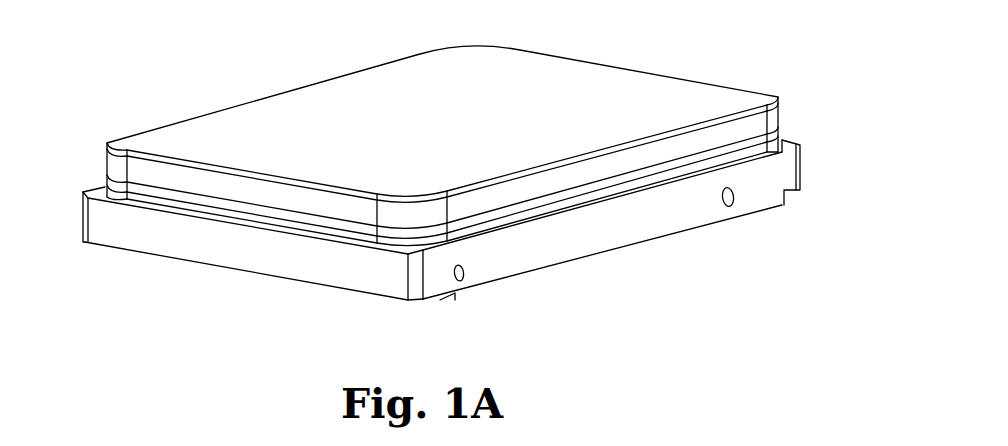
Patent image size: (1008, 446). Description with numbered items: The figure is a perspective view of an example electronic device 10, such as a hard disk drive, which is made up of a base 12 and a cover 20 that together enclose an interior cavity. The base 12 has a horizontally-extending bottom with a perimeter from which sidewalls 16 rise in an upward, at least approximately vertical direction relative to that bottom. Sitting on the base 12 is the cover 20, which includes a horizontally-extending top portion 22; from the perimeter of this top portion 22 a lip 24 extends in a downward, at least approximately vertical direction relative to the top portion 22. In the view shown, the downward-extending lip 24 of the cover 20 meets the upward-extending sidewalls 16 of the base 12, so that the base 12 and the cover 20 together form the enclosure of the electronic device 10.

The electronic device 10 is at (741, 46).
The base 12 is at (140, 220).
The sidewalls 16 is at (165, 198).
The cover 20 is at (215, 145).
The horizontally-extending top portion 22 is at (430, 160).
The lip 24 is at (226, 188).